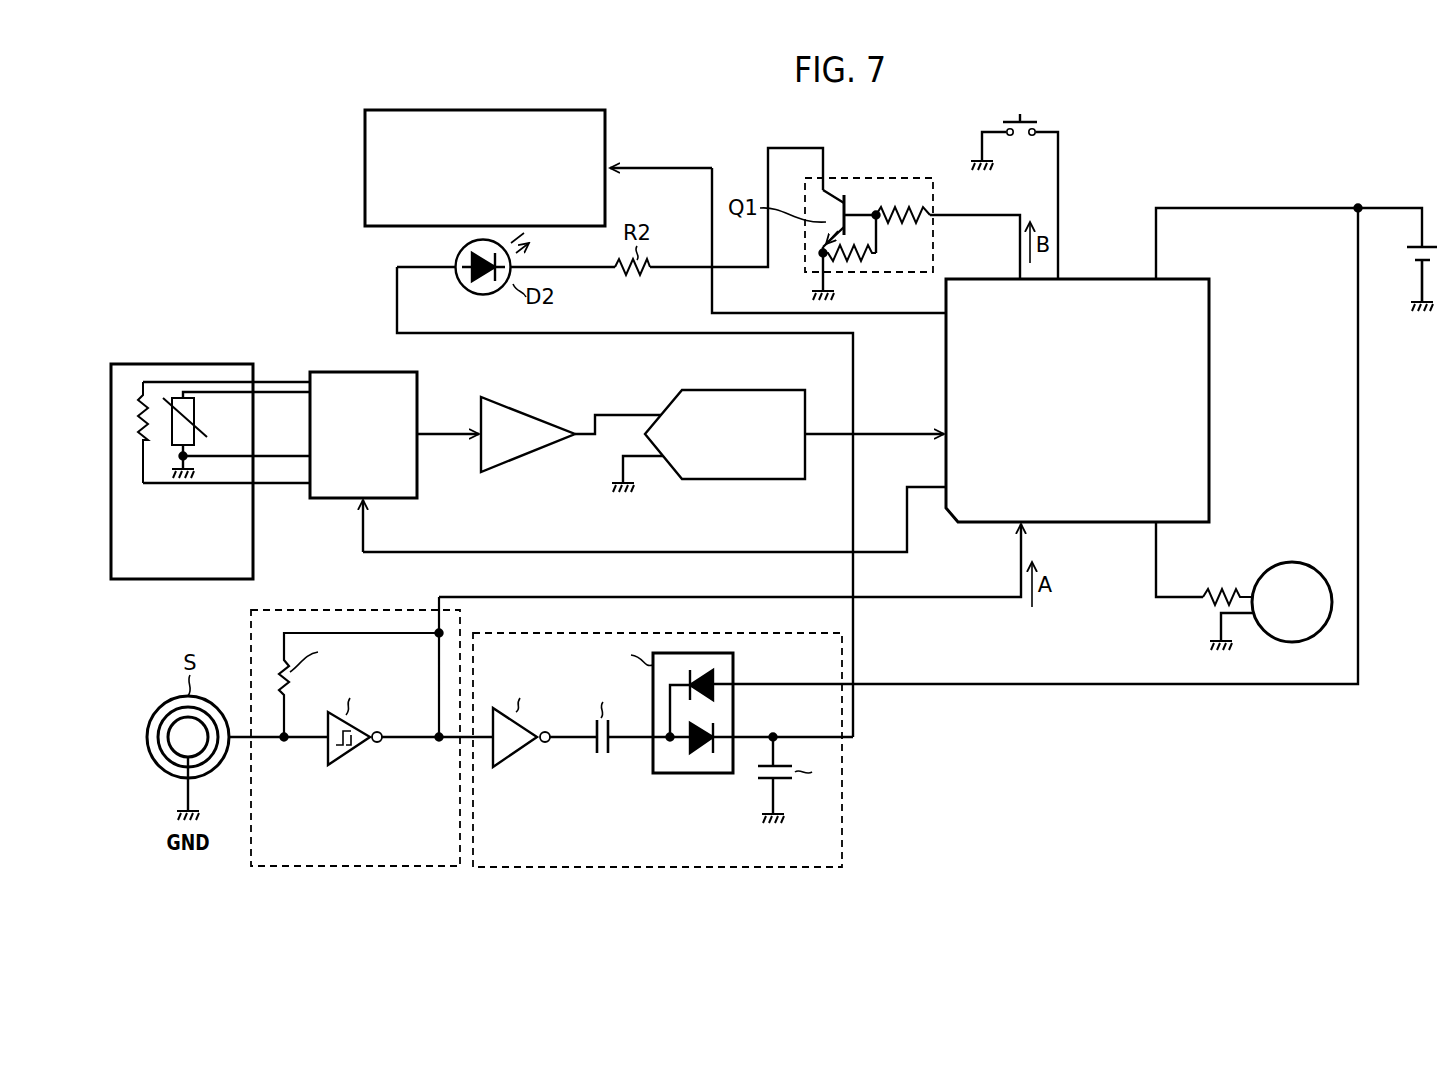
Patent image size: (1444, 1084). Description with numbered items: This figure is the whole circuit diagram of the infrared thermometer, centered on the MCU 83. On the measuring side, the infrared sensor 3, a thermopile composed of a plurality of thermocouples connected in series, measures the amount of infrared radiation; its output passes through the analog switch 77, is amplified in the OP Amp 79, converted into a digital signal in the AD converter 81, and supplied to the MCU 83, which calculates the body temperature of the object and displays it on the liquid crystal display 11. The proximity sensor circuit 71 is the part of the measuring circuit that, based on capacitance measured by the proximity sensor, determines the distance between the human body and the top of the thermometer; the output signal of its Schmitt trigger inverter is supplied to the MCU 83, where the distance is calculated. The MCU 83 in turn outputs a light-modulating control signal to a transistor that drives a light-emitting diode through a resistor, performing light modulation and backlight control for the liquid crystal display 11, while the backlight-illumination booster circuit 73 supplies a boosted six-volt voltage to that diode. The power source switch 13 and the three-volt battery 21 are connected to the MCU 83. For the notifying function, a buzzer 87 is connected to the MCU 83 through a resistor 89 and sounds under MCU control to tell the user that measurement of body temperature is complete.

The infrared sensor 3 is at (172, 364).
The liquid crystal display 11 is at (605, 143).
The power source switch 13 is at (1023, 120).
The battery 21 is at (1410, 255).
The proximity sensor circuit 71 is at (250, 625).
The backlight-illumination booster circuit 73 is at (843, 797).
The analog switch 77 is at (355, 372).
The OP Amp 79 is at (518, 410).
The AD converter 81 is at (737, 480).
The MCU 83 is at (1210, 400).
The buzzer 87 is at (1292, 562).
The resistor 89 is at (1233, 590).